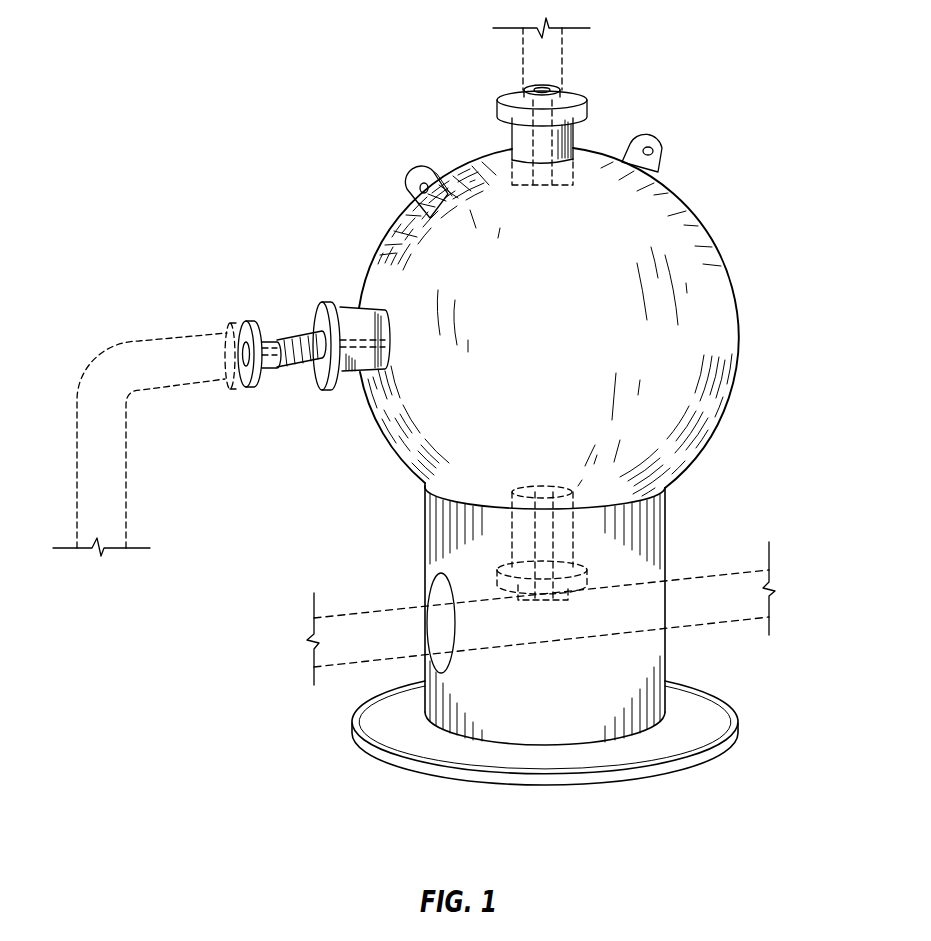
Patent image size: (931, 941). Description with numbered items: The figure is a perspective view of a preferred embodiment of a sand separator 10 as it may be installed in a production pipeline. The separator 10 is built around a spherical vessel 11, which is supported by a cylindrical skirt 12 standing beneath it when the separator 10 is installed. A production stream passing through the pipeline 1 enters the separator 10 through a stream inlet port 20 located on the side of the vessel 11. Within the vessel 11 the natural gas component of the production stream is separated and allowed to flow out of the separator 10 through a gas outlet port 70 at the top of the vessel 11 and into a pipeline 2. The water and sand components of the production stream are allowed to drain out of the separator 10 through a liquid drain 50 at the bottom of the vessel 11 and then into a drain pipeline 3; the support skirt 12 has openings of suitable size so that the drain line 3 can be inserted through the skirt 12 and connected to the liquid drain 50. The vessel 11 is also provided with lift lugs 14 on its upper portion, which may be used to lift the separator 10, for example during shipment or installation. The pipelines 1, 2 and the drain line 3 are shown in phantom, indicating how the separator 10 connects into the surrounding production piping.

The pipeline 1 is at (105, 378).
The pipeline 2 is at (550, 68).
The drain pipeline 3 is at (692, 582).
The separator 10 is at (742, 231).
The vessel 11 is at (717, 301).
The cylindrical skirt 12 is at (650, 640).
The lift lugs 14 is at (418, 170).
The stream inlet port 20 is at (301, 330).
The liquid drain 50 is at (505, 528).
The gas outlet port 70 is at (578, 128).